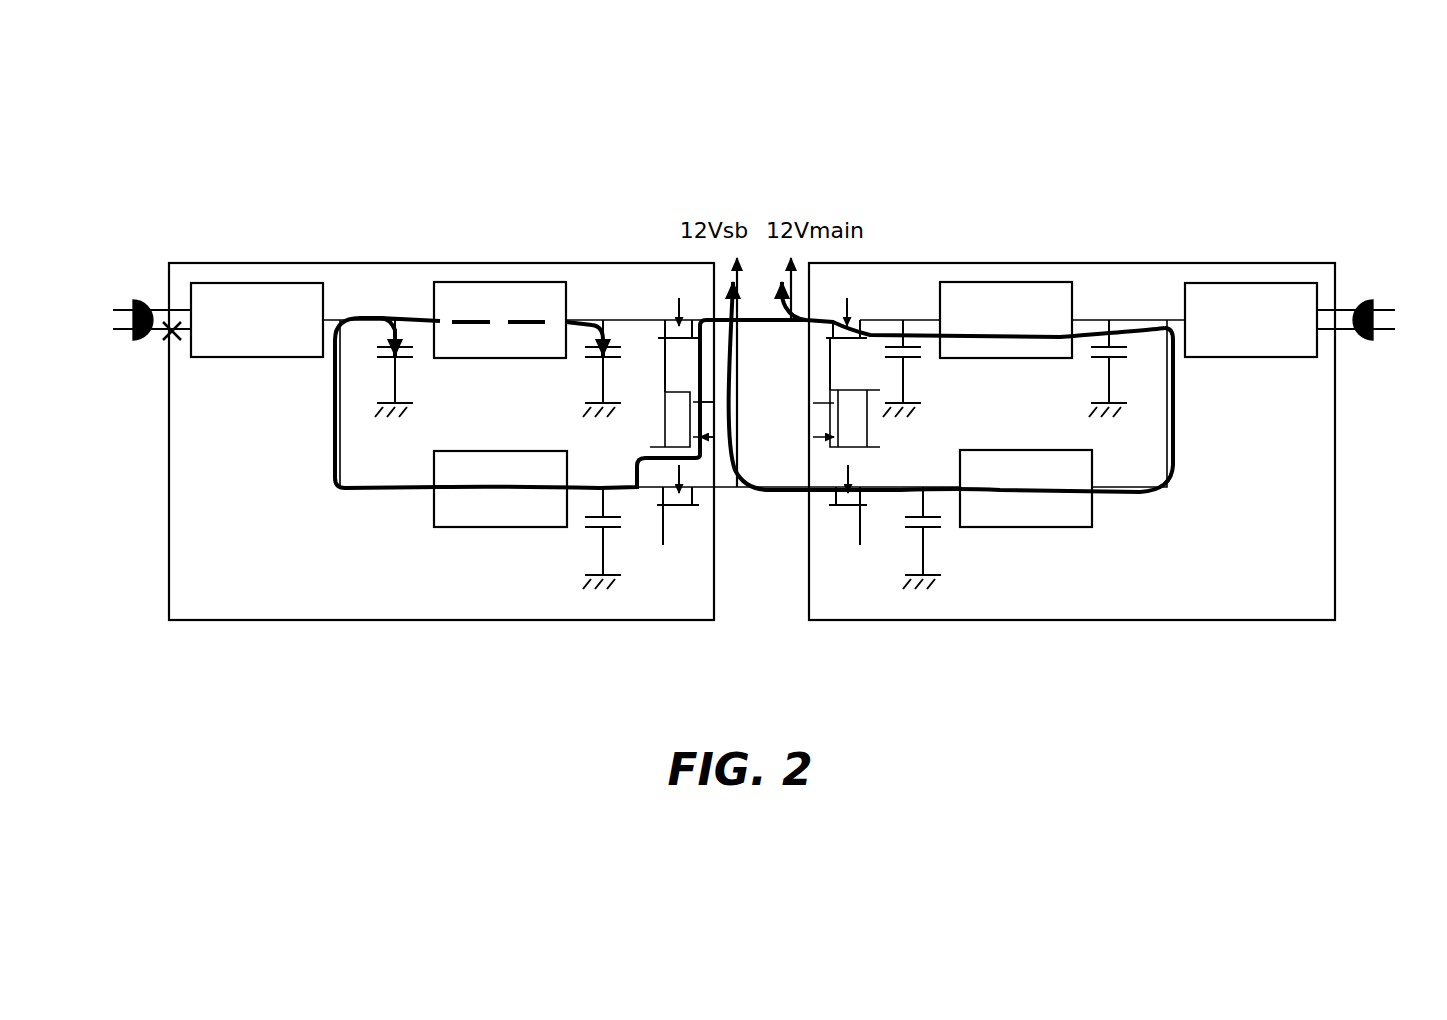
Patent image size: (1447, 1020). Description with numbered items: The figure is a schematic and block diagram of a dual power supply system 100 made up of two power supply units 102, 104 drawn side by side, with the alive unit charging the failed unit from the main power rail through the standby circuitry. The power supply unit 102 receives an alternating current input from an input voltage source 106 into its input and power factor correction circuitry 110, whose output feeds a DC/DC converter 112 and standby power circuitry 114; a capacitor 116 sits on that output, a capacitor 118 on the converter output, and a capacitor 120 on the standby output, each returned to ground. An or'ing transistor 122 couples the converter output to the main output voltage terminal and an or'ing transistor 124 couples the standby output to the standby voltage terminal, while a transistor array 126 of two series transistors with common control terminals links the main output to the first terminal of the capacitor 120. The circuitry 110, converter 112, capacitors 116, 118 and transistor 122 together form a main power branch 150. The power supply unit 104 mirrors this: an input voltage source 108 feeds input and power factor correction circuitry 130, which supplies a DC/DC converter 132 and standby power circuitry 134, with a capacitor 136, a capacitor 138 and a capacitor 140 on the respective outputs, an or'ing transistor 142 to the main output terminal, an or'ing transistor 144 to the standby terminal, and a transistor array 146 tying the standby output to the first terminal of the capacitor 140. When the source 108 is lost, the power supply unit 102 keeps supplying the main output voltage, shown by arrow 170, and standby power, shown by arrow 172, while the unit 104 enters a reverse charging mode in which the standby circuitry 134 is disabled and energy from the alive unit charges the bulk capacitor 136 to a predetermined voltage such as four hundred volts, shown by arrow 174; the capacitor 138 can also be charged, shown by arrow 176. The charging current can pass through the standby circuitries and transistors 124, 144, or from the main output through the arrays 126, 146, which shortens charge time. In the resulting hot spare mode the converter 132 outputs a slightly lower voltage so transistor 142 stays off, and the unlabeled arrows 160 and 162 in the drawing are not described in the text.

The power supply system 100 is at (1088, 126).
The power supply unit 102 is at (1287, 608).
The power supply unit 104 is at (218, 607).
The input voltage source 106 is at (1357, 300).
The input voltage source 108 is at (150, 298).
The input and power factor correction circuitry 110 is at (1230, 282).
The DC/DC converter 112 is at (1045, 282).
The standby power circuitry 114 is at (1010, 527).
The capacitor 116 is at (1122, 333).
The capacitor 118 is at (905, 343).
The capacitor 120 is at (905, 530).
The or'ing transistor 122 is at (853, 302).
The or'ing transistor 124 is at (830, 493).
The transistor array 126 is at (810, 418).
The input and power factor correction circuitry 130 is at (295, 282).
The DC/DC converter 132 is at (480, 282).
The standby power circuitry 134 is at (515, 527).
The capacitor 136 is at (390, 343).
The capacitor 138 is at (603, 343).
The capacitor 140 is at (620, 530).
The or'ing transistor 142 is at (667, 316).
The or'ing transistor 144 is at (697, 497).
The transistor array 146 is at (680, 393).
The main power branch 150 is at (1016, 392).
The DC/DC converter output path 160 is at (462, 377).
The standby power output path 162 is at (372, 502).
The arrow 170 is at (1093, 335).
The arrow 172 is at (1175, 450).
The arrow 174 is at (338, 470).
The arrow 176 is at (417, 305).